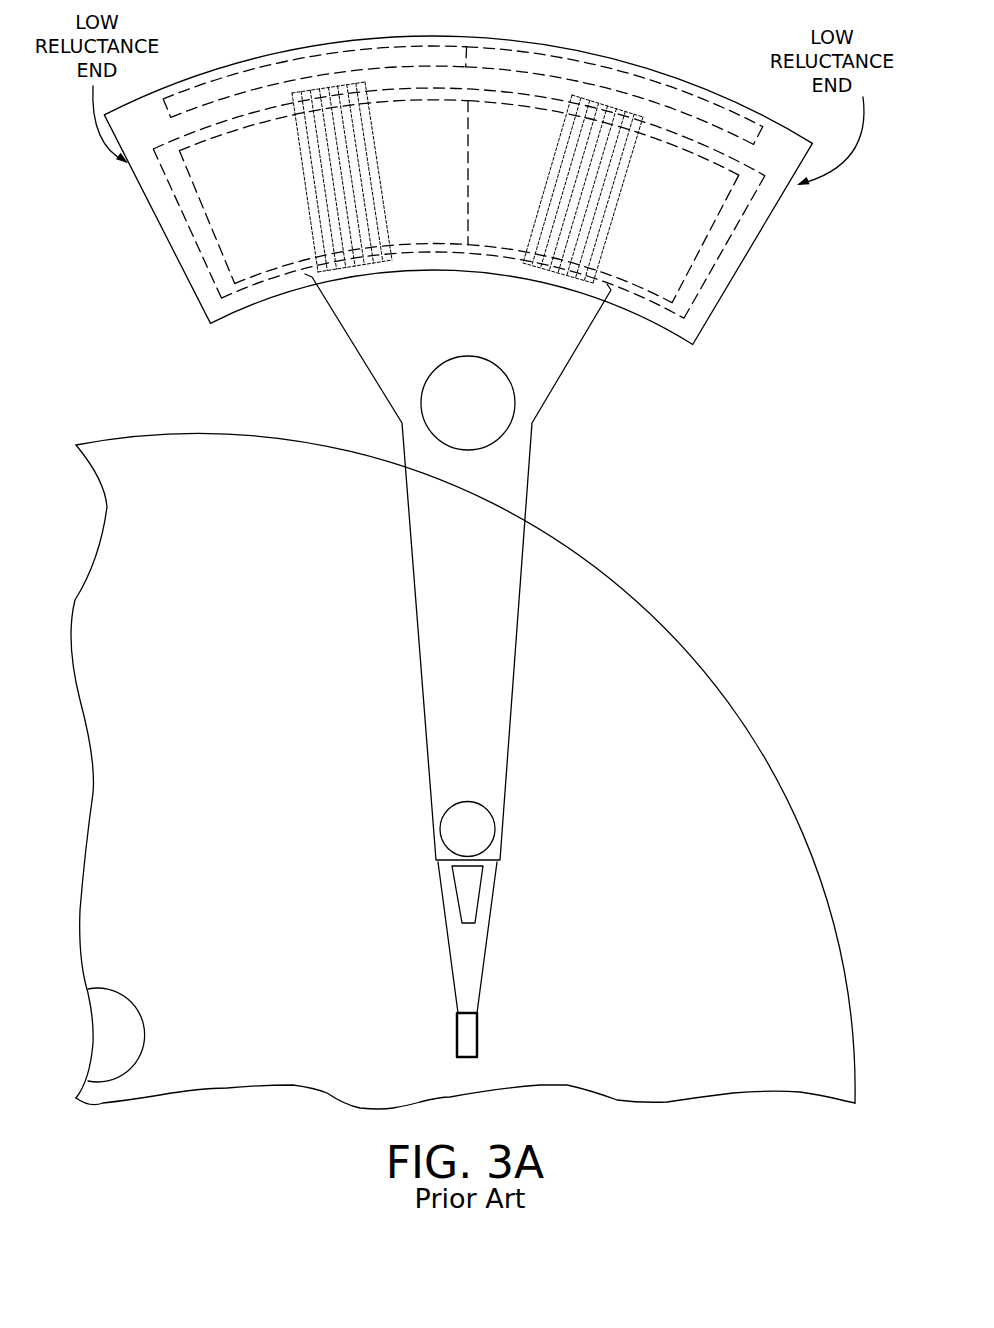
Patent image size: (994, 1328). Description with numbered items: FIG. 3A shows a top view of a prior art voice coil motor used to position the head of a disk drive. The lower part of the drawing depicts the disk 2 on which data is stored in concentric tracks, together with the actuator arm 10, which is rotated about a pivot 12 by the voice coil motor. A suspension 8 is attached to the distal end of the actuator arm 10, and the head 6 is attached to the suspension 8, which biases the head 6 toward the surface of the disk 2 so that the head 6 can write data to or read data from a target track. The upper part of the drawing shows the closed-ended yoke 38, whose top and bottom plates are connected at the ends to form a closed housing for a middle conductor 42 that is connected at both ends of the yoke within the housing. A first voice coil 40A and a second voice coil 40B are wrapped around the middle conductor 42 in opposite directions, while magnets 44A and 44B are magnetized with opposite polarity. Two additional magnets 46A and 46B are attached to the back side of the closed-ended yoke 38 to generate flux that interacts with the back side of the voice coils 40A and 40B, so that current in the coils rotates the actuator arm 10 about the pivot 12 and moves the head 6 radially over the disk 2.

The disk 2 is at (642, 576).
The head 6 is at (470, 1040).
The suspension 8 is at (478, 967).
The actuator arm 10 is at (506, 670).
The pivot 12 is at (457, 415).
The closed-ended yoke 38 is at (776, 168).
The first voice coil 40A is at (320, 93).
The second voice coil 40B is at (607, 107).
The middle conductor 42 is at (740, 228).
The magnet 44A is at (191, 171).
The magnet 44B is at (701, 194).
The additional magnet 46A is at (375, 58).
The additional magnet 46B is at (655, 97).